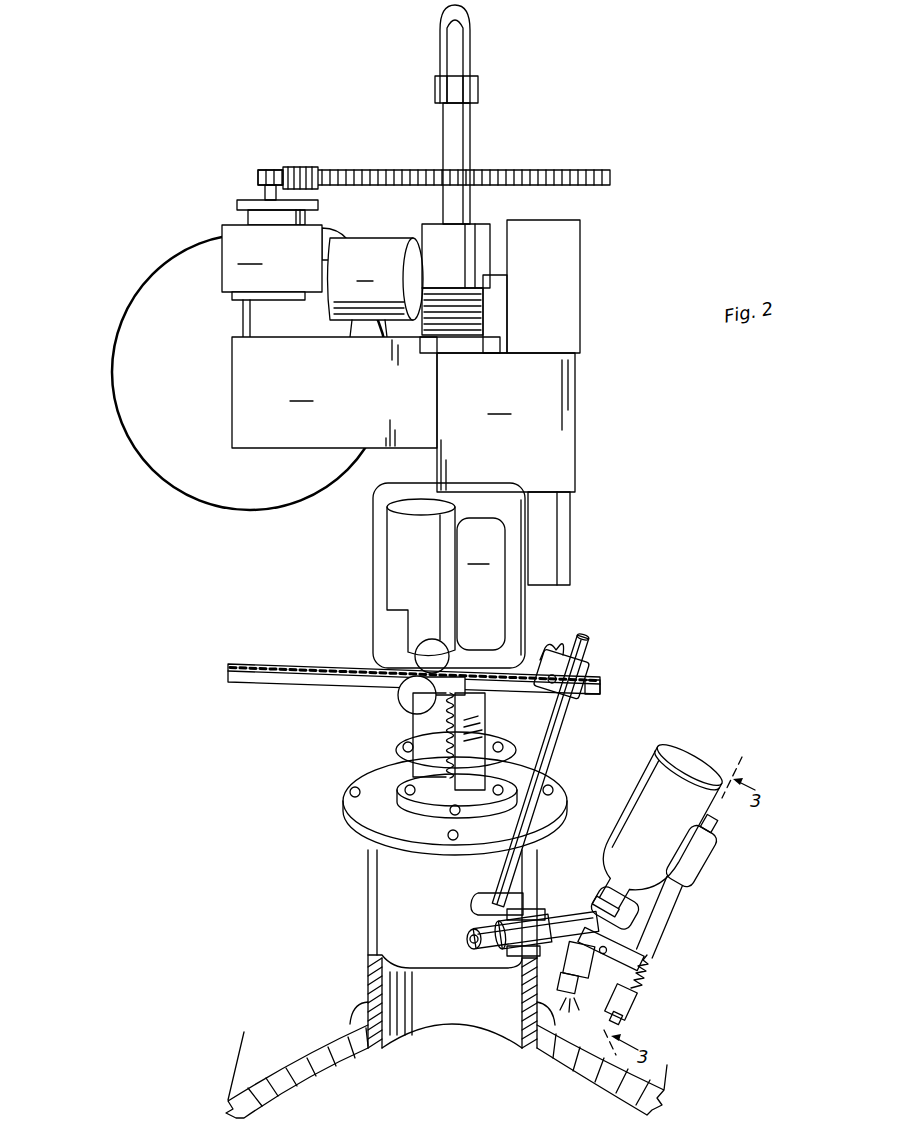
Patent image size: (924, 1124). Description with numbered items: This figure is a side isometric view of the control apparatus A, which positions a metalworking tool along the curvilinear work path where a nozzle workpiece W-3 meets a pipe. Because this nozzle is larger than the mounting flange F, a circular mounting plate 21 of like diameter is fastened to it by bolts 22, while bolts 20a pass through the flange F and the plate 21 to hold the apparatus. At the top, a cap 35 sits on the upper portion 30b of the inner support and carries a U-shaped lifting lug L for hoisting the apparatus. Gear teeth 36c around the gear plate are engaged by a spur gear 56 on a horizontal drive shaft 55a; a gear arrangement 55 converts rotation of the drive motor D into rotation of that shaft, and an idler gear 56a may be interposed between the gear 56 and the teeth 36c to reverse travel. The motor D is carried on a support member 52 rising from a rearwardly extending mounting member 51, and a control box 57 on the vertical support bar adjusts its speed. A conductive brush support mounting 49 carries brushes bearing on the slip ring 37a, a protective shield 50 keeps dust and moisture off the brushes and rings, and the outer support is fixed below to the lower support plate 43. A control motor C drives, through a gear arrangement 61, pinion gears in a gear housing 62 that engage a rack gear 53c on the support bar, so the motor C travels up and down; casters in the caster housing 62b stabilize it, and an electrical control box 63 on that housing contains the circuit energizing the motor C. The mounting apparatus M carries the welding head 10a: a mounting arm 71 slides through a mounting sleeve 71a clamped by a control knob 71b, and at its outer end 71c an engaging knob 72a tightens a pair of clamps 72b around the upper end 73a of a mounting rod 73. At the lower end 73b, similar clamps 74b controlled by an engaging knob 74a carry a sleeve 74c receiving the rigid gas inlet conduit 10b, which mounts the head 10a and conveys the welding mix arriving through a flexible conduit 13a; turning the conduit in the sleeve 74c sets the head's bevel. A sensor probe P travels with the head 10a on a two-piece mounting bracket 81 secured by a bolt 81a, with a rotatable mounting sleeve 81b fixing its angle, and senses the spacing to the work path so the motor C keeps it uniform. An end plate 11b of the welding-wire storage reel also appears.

The lifting lug L is at (470, 40).
The cap 35 is at (478, 88).
The upper portion of the inner support 30b is at (462, 207).
The gear teeth 36c is at (612, 178).
The idler gear 56a is at (300, 167).
The spur gear 56 is at (265, 170).
The drive shaft 55a is at (262, 192).
The gear arrangement 55 is at (285, 250).
The support member 52 is at (250, 318).
The drive motor D is at (376, 287).
The first conductive slip ring 37a is at (437, 228).
The brush support mounting 49 is at (493, 291).
The protective shield 50 is at (560, 237).
The mounting member 51 is at (334, 392).
The control box 57 is at (497, 414).
The control apparatus A is at (580, 452).
The electrical control box 63 is at (543, 516).
The gear arrangement 61 is at (410, 630).
The gear housing 62 is at (481, 584).
The caster housing 62b is at (513, 596).
The control motor C is at (400, 532).
The mounting sleeve 71a is at (456, 662).
The mounting arm 71 is at (228, 675).
The control knob 71b is at (398, 699).
The outer end of the mounting arm 71c is at (600, 688).
The rack gear 53c is at (487, 712).
The lower support plate 43 is at (401, 750).
The circular mounting plate 21 is at (399, 780).
The bolts 20a is at (406, 790).
The bolts 22 is at (350, 792).
The mounting flange F is at (350, 817).
The nozzle workpiece W-3 is at (368, 867).
The end plate 11b is at (120, 399).
The mounting rod 73 is at (560, 724).
The upper end of the mounting rod 73a is at (590, 641).
The clamps 72b is at (580, 668).
The engaging knob 72a is at (556, 652).
The mounting apparatus M is at (604, 717).
The welding head 10a is at (690, 760).
The mounting bracket 81 is at (618, 945).
The bolt 81a is at (591, 976).
The mounting sleeve 81b is at (658, 957).
The sensor probe P is at (695, 905).
The rigid gas inlet conduit 10b is at (551, 921).
The flexible conduit 13a is at (467, 939).
The engaging knob 74a is at (483, 892).
The clamps 74b is at (476, 910).
The sleeve 74c is at (540, 909).
The lower end of the mounting rod 73b is at (522, 888).